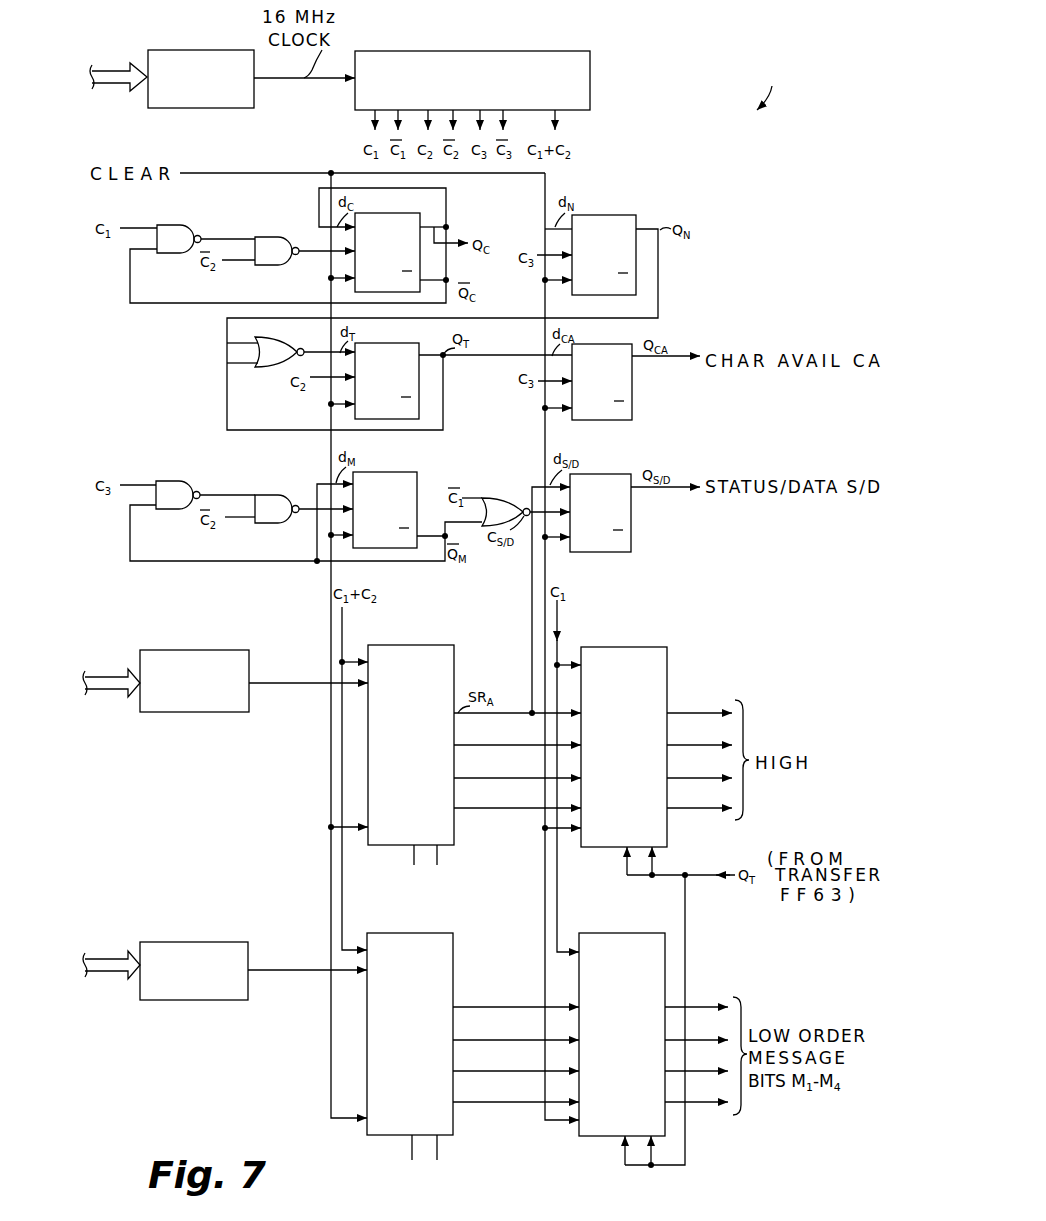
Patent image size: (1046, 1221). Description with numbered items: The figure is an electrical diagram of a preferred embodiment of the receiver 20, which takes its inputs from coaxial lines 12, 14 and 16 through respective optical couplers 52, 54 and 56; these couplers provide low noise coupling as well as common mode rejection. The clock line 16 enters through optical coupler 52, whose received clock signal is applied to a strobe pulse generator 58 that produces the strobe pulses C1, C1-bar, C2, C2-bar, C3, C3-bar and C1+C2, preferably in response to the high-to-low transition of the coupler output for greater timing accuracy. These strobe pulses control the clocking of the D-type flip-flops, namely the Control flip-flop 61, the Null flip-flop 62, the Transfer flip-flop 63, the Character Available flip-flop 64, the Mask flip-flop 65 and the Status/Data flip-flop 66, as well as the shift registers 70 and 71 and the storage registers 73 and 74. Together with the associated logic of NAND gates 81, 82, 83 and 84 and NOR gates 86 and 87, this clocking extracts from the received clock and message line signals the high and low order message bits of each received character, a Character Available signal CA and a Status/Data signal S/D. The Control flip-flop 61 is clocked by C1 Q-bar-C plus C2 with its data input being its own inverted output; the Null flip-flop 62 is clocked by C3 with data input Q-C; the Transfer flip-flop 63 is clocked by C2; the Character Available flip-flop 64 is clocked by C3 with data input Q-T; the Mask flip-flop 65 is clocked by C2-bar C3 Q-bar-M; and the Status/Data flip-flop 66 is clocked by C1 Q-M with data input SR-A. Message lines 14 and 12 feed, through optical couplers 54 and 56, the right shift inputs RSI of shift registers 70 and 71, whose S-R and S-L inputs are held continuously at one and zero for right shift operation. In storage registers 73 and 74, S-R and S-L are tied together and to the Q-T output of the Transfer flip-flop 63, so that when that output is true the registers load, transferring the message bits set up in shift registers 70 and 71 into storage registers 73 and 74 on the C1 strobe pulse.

The receiver 20 is at (762, 75).
The coaxial line 16 is at (112, 72).
The optical coupler 52 is at (186, 54).
The strobe pulse generator 58 is at (546, 52).
The NAND gate 81 is at (190, 219).
The NAND gate 82 is at (286, 226).
The Control flip-flop 61 is at (412, 212).
The Null flip-flop 62 is at (620, 216).
The NOR gate 86 is at (270, 371).
The Transfer flip-flop 63 is at (419, 402).
The Character Available flip-flop 64 is at (632, 404).
The NAND gate 83 is at (190, 475).
The NAND gate 84 is at (286, 481).
The Mask flip-flop 65 is at (441, 465).
The NOR gate 87 is at (497, 495).
The Status/Data flip-flop 66 is at (631, 539).
The coaxial line 14 is at (110, 672).
The optical coupler 54 is at (214, 650).
The shift register 70 is at (441, 638).
The storage register 73 is at (653, 637).
The coaxial line 12 is at (110, 960).
The optical coupler 56 is at (214, 936).
The shift register 71 is at (450, 933).
The storage register 74 is at (660, 924).